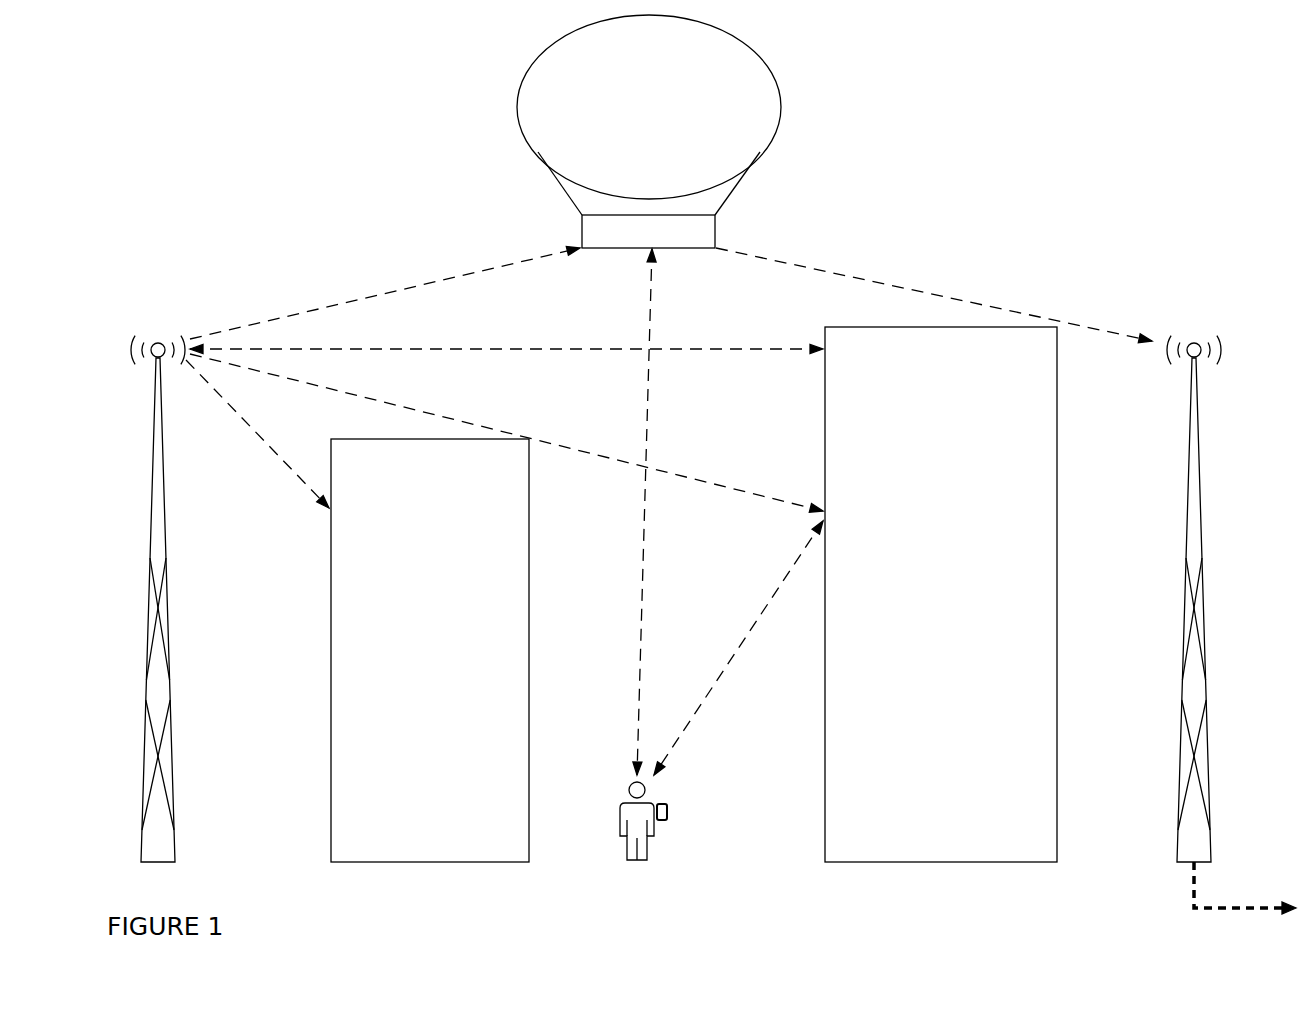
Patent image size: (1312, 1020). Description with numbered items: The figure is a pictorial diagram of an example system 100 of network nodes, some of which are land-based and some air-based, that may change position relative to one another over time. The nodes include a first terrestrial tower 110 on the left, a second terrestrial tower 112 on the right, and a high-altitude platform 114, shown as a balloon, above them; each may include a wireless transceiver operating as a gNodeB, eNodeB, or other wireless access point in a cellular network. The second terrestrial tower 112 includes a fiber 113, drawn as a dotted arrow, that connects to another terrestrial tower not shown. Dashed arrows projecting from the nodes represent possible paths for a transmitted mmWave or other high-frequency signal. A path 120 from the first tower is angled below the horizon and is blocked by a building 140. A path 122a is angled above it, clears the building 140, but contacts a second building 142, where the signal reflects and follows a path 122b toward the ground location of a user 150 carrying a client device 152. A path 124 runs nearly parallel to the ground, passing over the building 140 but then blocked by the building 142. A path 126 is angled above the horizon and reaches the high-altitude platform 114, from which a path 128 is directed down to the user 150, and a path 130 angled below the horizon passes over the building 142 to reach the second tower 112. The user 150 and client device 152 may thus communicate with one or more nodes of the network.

The system 100 is at (150, 901).
The first terrestrial tower 110 is at (158, 567).
The second terrestrial tower 112 is at (1194, 567).
The fiber 113 is at (1245, 903).
The high-altitude platform 114 is at (630, 115).
The path 120 is at (257, 434).
The path 122a is at (506, 433).
The path 122b is at (738, 648).
The path 124 is at (506, 335).
The path 126 is at (385, 293).
The path 128 is at (628, 512).
The path 130 is at (934, 295).
The building 140 is at (411, 670).
The building 142 is at (911, 605).
The user 150 is at (650, 839).
The client device 152 is at (684, 813).